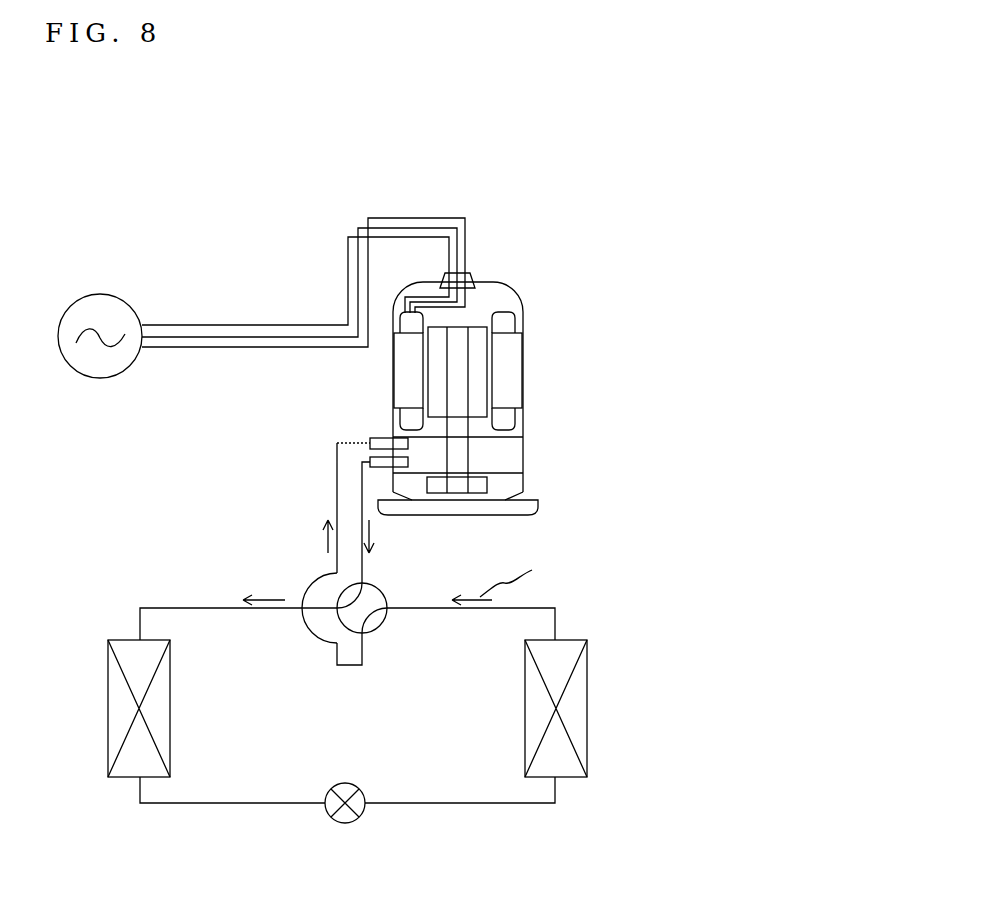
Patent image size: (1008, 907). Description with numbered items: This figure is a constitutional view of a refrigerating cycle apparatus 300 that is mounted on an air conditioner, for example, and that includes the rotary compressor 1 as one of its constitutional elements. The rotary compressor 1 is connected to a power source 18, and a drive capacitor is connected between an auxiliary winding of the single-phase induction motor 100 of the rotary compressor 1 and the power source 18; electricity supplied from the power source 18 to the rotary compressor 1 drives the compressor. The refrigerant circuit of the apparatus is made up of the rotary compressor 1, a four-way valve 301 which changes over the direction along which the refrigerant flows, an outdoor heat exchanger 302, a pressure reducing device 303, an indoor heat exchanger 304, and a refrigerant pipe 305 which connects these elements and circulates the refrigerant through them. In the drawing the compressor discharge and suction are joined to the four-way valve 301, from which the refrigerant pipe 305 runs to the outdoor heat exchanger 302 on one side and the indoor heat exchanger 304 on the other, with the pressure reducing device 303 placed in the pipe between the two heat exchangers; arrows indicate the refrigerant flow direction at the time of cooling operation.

The refrigerating cycle apparatus 300 is at (91, 199).
The power source 18 is at (95, 367).
The rotary compressor 1 is at (515, 292).
The single-phase induction motor 100 is at (513, 387).
The four-way valve 301 is at (387, 593).
The outdoor heat exchanger 302 is at (170, 700).
The pressure reducing device 303 is at (345, 783).
The indoor heat exchanger 304 is at (587, 700).
The refrigerant pipe 305 is at (415, 805).